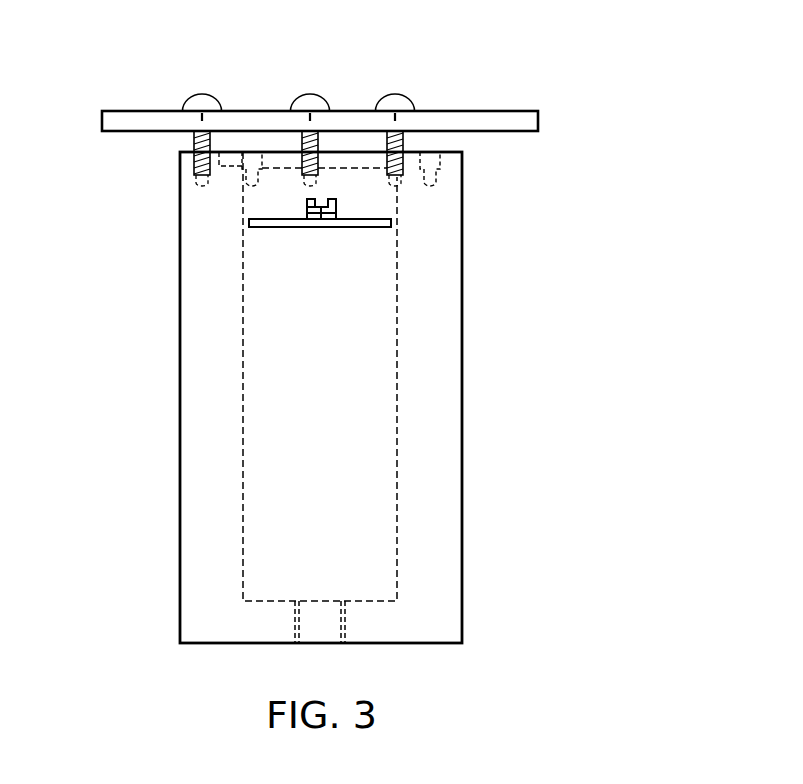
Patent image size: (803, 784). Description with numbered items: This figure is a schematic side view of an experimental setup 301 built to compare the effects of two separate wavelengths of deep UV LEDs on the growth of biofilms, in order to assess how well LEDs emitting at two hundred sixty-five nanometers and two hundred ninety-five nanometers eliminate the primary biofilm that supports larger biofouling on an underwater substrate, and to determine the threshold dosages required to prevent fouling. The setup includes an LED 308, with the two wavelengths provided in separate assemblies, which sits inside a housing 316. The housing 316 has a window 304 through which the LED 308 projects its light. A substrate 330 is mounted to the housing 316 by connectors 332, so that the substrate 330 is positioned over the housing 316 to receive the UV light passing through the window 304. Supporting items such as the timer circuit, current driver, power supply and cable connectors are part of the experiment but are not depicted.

The experimental setup 301 is at (124, 80).
The substrate 330 is at (512, 110).
The connectors 332 is at (404, 97).
The housing 316 is at (179, 292).
The window 304 is at (373, 173).
The LED 308 is at (295, 205).